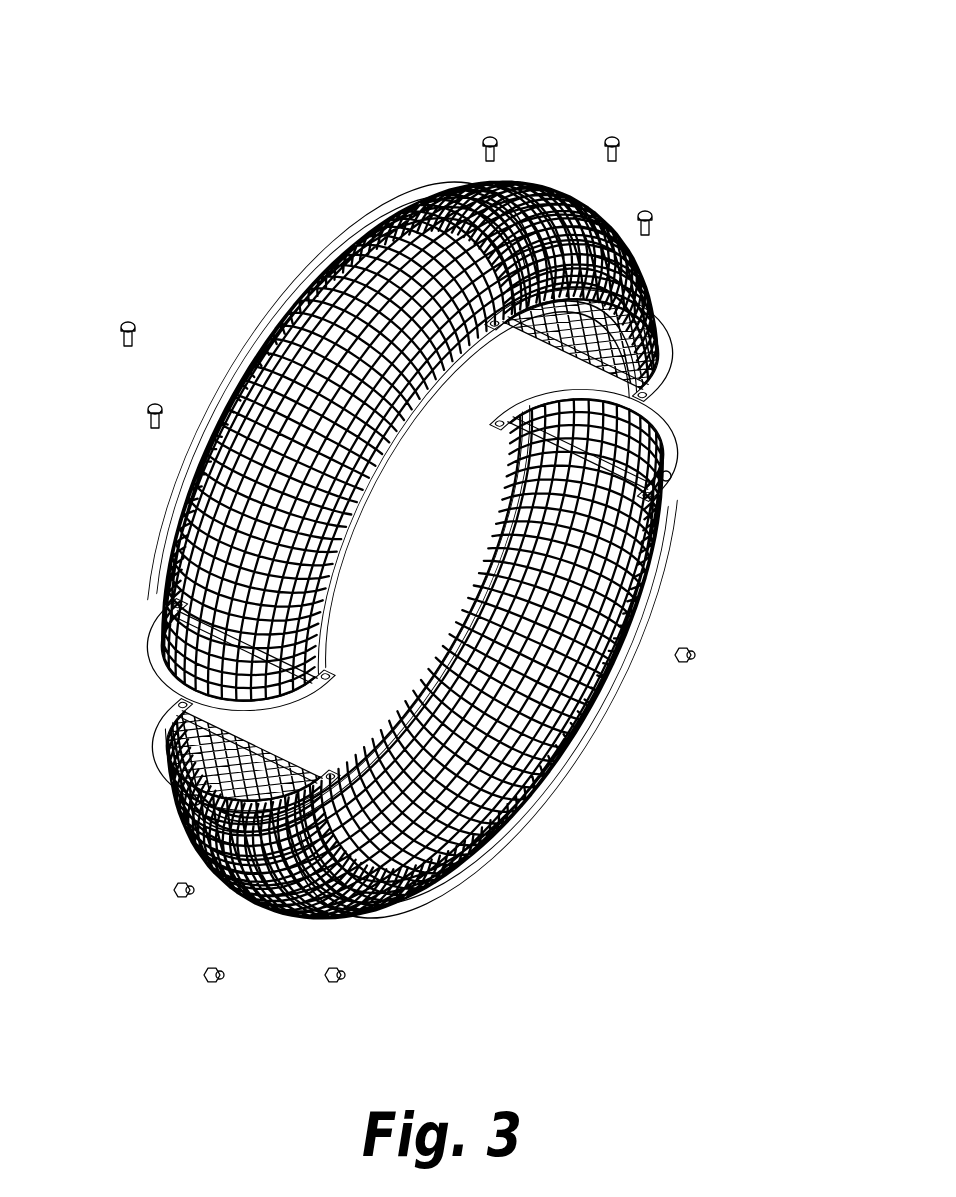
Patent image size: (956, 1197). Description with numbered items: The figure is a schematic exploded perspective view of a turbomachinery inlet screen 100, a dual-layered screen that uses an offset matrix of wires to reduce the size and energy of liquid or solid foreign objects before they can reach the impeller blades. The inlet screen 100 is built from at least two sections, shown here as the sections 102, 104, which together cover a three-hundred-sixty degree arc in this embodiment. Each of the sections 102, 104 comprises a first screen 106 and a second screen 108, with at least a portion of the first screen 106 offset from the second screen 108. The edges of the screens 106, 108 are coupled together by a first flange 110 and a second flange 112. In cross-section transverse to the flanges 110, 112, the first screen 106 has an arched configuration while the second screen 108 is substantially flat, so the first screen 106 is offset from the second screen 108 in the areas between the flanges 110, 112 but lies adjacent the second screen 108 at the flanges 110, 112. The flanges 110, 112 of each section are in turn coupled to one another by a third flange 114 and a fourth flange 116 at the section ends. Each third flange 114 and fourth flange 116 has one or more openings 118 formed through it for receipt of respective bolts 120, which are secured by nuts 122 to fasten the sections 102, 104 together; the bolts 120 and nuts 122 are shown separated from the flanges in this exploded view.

The inlet screen 100 is at (700, 60).
The section 102 is at (405, 487).
The section 104 is at (425, 640).
The first screen 106 is at (462, 178).
The second screen 108 is at (535, 322).
The first flange 110 is at (245, 330).
The second flange 112 is at (400, 405).
The third flange 114 is at (157, 660).
The fourth flange 116 is at (660, 335).
The opening 118 is at (668, 473).
The bolt 120 is at (648, 212).
The nut 122 is at (693, 645).